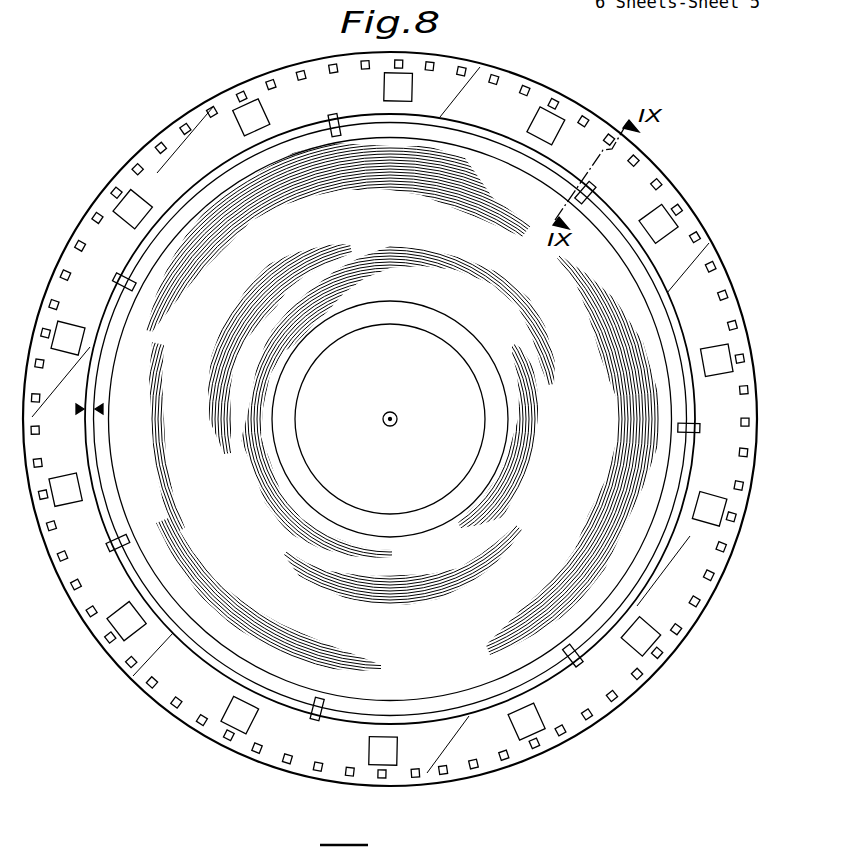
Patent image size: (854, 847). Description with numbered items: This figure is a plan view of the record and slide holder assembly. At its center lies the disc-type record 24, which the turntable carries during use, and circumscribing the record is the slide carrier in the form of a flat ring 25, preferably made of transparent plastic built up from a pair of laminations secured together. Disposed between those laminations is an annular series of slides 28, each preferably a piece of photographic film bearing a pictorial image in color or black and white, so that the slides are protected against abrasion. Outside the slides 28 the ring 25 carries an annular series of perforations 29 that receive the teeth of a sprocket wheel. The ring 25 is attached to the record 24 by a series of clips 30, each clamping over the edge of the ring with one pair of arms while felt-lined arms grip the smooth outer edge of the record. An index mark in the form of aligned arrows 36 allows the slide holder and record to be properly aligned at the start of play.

The disc-type record 24 is at (590, 539).
The flat ring 25 is at (604, 712).
The slide 28 is at (136, 198).
The perforations 29 is at (726, 546).
The clips 30 is at (110, 540).
The aligned arrows 36 is at (100, 407).